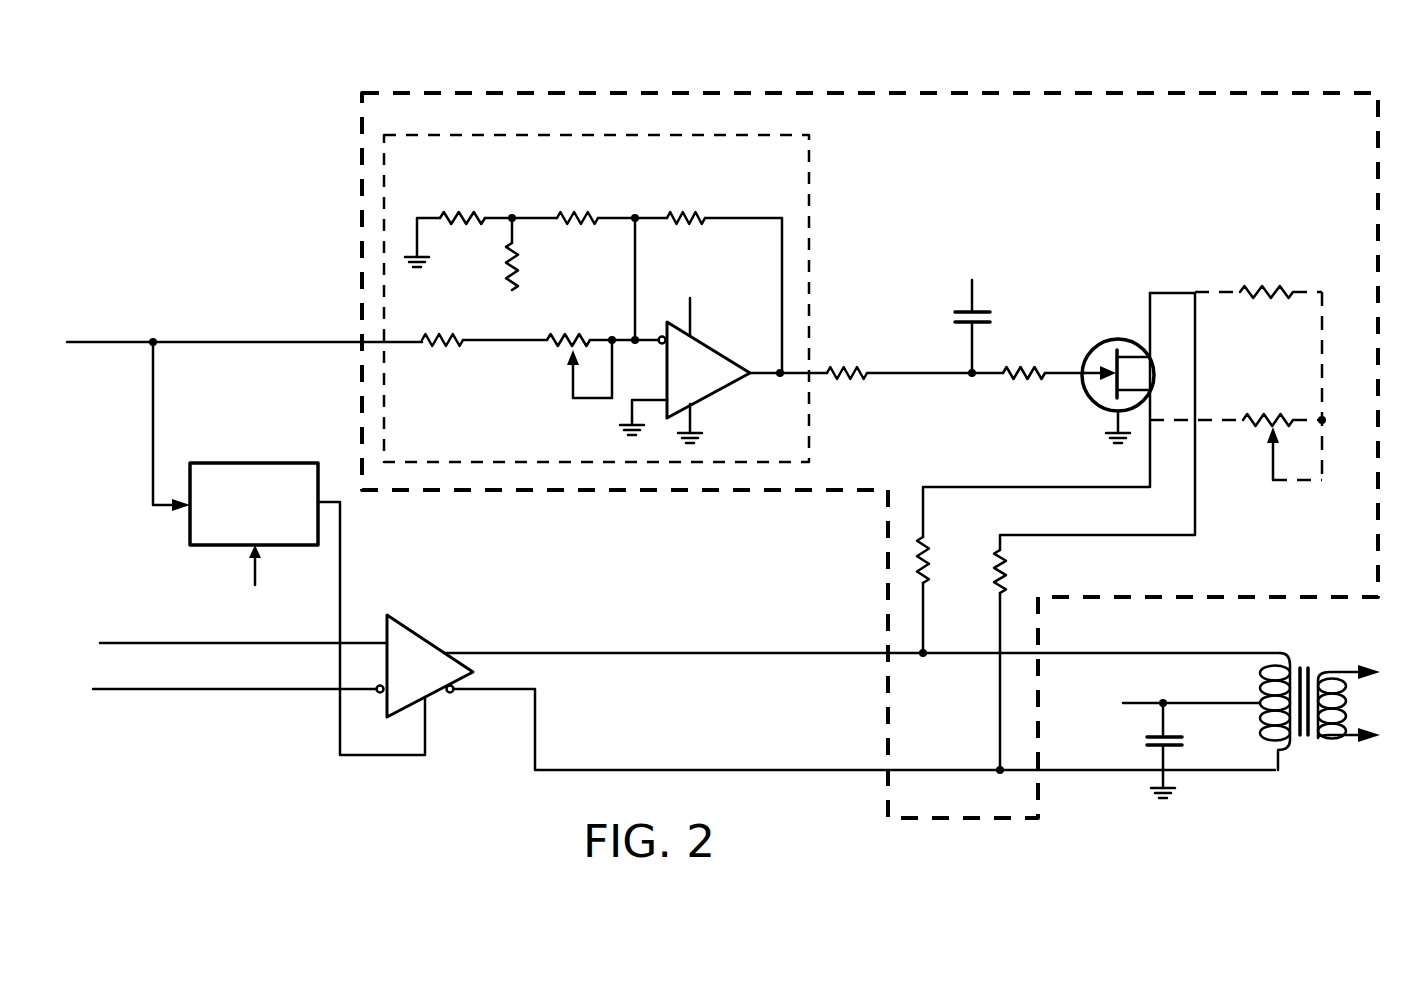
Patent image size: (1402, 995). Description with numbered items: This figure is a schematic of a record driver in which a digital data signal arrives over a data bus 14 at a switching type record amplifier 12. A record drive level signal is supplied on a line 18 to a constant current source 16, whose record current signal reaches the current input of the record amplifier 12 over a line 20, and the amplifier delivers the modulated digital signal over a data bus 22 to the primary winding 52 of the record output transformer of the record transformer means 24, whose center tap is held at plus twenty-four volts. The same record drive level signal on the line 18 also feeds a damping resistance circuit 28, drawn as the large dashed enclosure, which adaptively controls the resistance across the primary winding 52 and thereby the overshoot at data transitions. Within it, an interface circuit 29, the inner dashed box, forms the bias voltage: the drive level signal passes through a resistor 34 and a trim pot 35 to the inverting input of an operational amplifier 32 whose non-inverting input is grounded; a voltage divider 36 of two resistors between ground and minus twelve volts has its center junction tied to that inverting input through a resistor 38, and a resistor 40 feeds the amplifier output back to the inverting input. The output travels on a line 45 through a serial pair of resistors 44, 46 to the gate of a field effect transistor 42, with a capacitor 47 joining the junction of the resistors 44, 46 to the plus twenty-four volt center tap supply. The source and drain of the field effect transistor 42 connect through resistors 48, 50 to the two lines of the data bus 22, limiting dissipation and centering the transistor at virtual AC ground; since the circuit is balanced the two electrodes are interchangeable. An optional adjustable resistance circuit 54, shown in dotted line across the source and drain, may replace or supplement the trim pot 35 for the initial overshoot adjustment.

The record amplifier 12 is at (407, 630).
The data bus 14 is at (168, 645).
The constant current source 16 is at (242, 463).
The line 18 is at (130, 347).
The line 20 is at (342, 558).
The data bus 22 is at (757, 770).
The record transformer means 24 is at (1307, 758).
The damping resistance circuit 28 is at (640, 492).
The interface circuit 29 is at (812, 213).
The operational amplifier 32 is at (713, 340).
The resistor 34 is at (442, 353).
The trim pot 35 is at (557, 352).
The voltage divider 36 is at (496, 208).
The resistor 38 is at (593, 218).
The resistor 40 is at (707, 215).
The field effect transistor 42 is at (1123, 338).
The resistor 44 is at (842, 382).
The line 45 is at (795, 380).
The resistor 46 is at (1027, 387).
The capacitor 47 is at (980, 308).
The resistor 48 is at (920, 537).
The resistor 50 is at (997, 560).
The primary winding 52 is at (1260, 688).
The adjustable resistance circuit 54 is at (1295, 480).